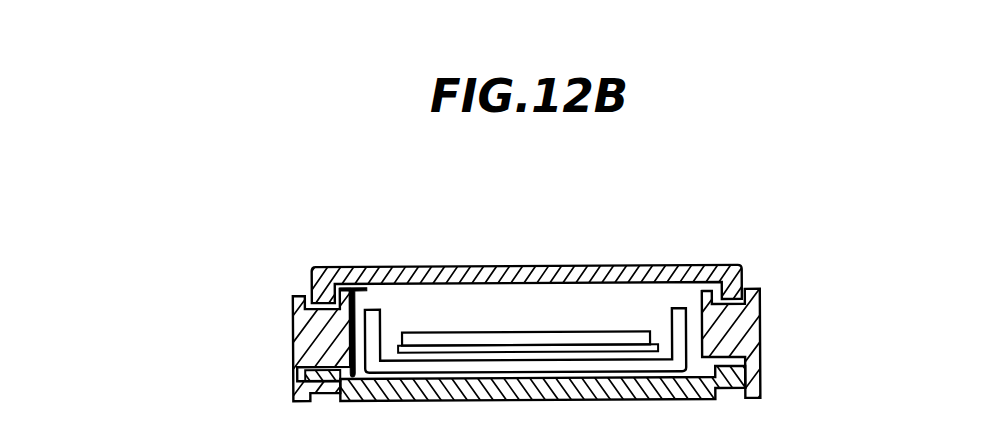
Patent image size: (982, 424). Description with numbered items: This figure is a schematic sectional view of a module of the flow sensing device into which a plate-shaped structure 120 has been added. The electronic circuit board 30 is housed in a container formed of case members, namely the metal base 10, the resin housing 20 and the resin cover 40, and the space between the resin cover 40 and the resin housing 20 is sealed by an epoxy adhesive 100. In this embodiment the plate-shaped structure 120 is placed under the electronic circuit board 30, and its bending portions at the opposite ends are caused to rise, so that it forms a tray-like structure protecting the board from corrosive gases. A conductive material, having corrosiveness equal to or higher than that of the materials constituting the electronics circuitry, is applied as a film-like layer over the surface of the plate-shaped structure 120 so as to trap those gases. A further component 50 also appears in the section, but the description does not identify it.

The metal base 10 is at (761, 383).
The resin housing 20 is at (294, 322).
The electronic circuit board 30 is at (466, 338).
The resin cover 40 is at (606, 274).
The sealing member 50 is at (296, 373).
The epoxy adhesive 100 is at (747, 291).
The plate-shaped structure 120 is at (372, 307).